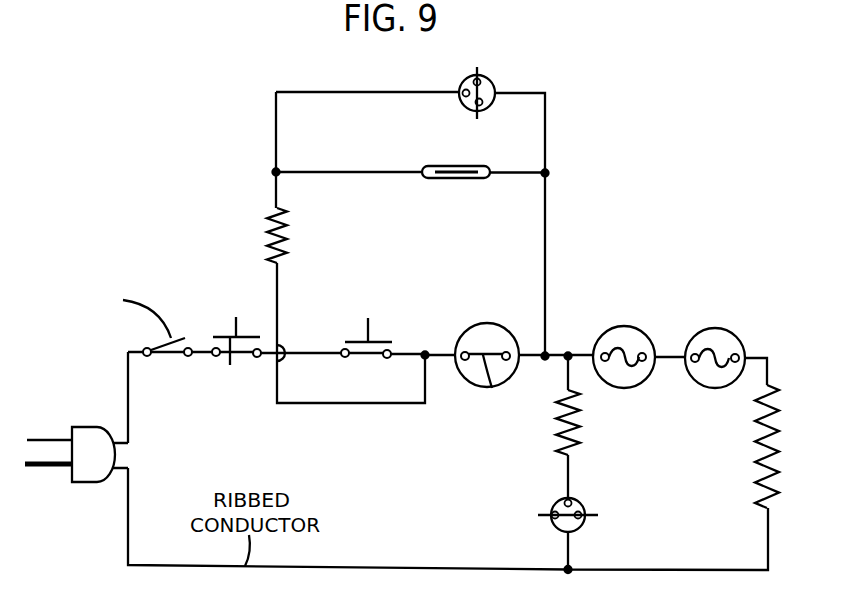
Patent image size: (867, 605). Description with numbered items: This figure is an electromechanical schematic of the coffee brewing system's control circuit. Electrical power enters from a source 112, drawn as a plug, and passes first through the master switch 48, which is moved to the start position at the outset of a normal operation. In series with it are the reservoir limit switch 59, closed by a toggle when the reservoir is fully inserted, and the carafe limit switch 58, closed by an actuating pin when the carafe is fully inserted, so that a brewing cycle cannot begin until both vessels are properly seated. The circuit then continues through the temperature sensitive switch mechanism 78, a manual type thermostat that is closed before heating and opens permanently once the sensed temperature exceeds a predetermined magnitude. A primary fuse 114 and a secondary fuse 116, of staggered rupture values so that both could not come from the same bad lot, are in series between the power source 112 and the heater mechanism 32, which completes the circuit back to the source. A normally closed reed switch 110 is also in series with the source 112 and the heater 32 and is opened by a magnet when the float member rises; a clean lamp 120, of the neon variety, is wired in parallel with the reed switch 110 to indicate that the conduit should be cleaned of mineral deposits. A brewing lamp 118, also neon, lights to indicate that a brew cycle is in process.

The heater mechanism 32 is at (757, 493).
The master switch 48 is at (151, 358).
The carafe limit switch 58 is at (383, 341).
The reservoir limit switch 59 is at (231, 313).
The temperature sensitive switch mechanism 78 is at (492, 390).
The reed switch 110 is at (436, 165).
The source of electrical power 112 is at (89, 472).
The primary fuse 114 is at (745, 344).
The secondary fuse 116 is at (621, 388).
The brewing lamp 118 is at (579, 530).
The clean lamp 120 is at (490, 78).